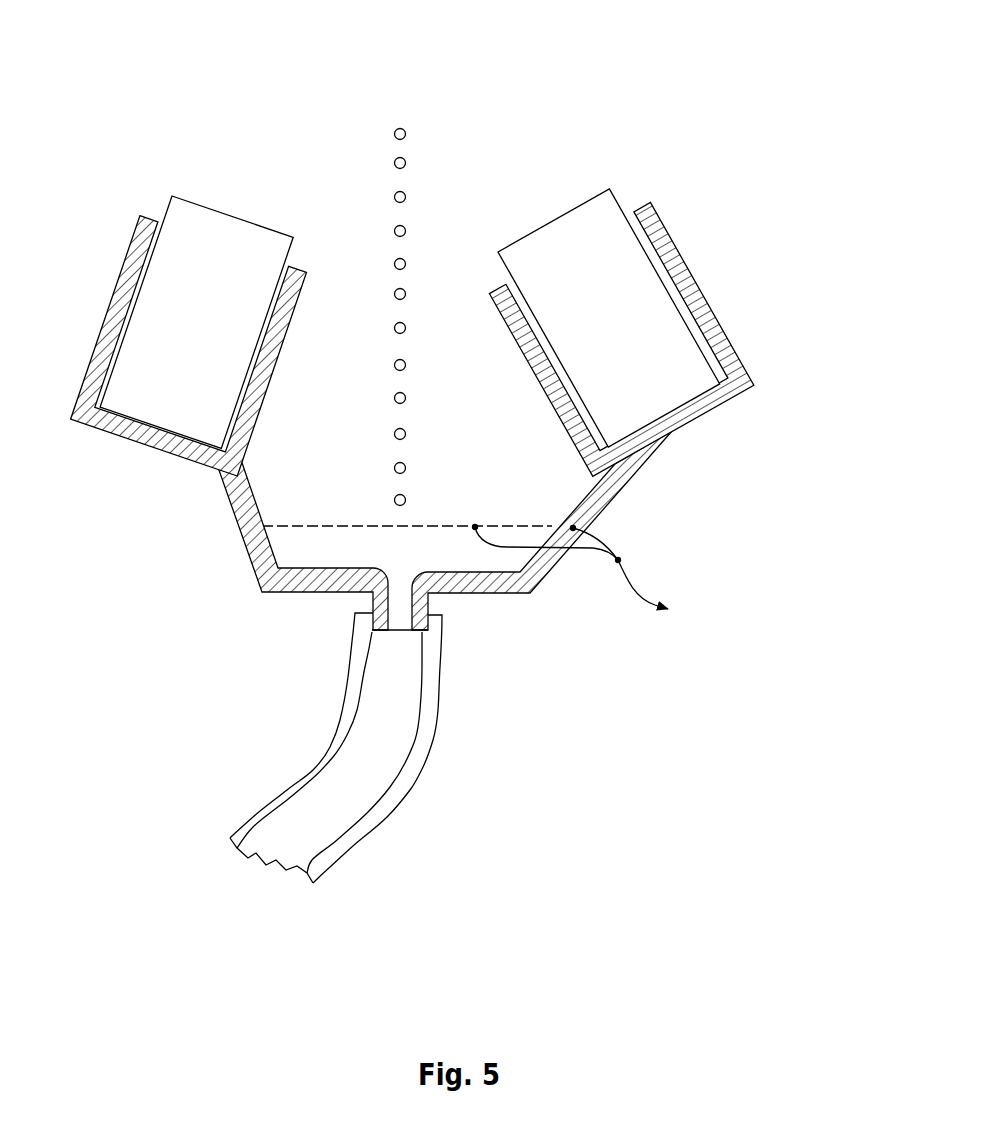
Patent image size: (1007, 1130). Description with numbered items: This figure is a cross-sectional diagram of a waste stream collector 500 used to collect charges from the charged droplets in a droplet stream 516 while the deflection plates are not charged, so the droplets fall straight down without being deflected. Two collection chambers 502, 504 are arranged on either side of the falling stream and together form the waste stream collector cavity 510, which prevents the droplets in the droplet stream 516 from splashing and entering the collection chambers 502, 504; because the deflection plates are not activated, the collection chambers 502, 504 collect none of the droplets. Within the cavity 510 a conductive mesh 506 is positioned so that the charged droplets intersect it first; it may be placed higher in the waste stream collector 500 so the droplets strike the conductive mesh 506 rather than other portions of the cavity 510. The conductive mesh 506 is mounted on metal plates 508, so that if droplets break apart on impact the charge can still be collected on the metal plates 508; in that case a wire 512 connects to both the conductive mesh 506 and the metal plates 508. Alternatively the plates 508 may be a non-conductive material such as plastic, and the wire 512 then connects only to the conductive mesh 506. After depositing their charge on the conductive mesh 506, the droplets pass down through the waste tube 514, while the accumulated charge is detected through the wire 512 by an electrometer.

The waste stream collector 500 is at (230, 123).
The collection chamber 502 is at (177, 383).
The collection chamber 504 is at (662, 340).
The conductive mesh 506 is at (357, 522).
The metal plates 508 is at (228, 505).
The waste stream collector cavity 510 is at (507, 453).
The wire 512 is at (640, 600).
The waste tube 514 is at (407, 793).
The droplet stream 516 is at (438, 155).